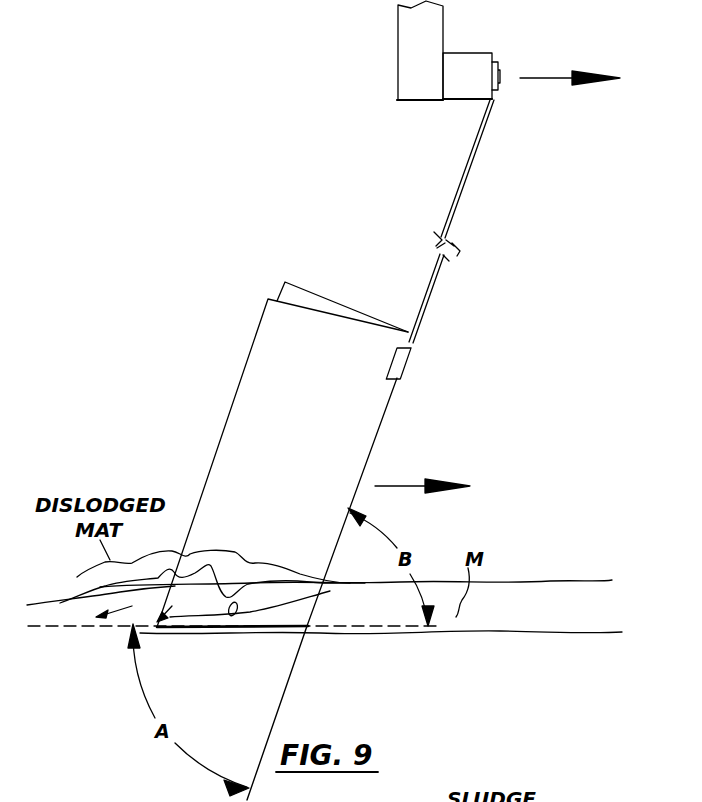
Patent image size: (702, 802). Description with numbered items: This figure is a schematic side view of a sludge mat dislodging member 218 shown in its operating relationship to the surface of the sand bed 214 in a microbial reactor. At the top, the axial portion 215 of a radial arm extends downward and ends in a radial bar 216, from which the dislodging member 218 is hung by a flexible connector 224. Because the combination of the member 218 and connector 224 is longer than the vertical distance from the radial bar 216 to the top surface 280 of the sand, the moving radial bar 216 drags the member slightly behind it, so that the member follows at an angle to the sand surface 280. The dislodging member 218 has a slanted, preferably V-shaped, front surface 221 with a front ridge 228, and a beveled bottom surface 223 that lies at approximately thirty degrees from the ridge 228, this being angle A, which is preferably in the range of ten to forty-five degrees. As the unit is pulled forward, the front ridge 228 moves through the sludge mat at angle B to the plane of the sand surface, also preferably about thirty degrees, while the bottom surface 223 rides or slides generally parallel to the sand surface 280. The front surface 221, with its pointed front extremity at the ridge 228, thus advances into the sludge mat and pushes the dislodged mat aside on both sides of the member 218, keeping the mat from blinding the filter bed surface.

The sand bed 214 is at (392, 652).
The axial portion 215 is at (424, 36).
The radial bar 216 is at (459, 66).
The dislodging member 218 is at (309, 297).
The front surface 221 is at (315, 433).
The bottom surface 223 is at (236, 623).
The flexible connector 224 is at (466, 168).
The front ridge 228 is at (372, 444).
The top surface of the sand 280 is at (497, 630).